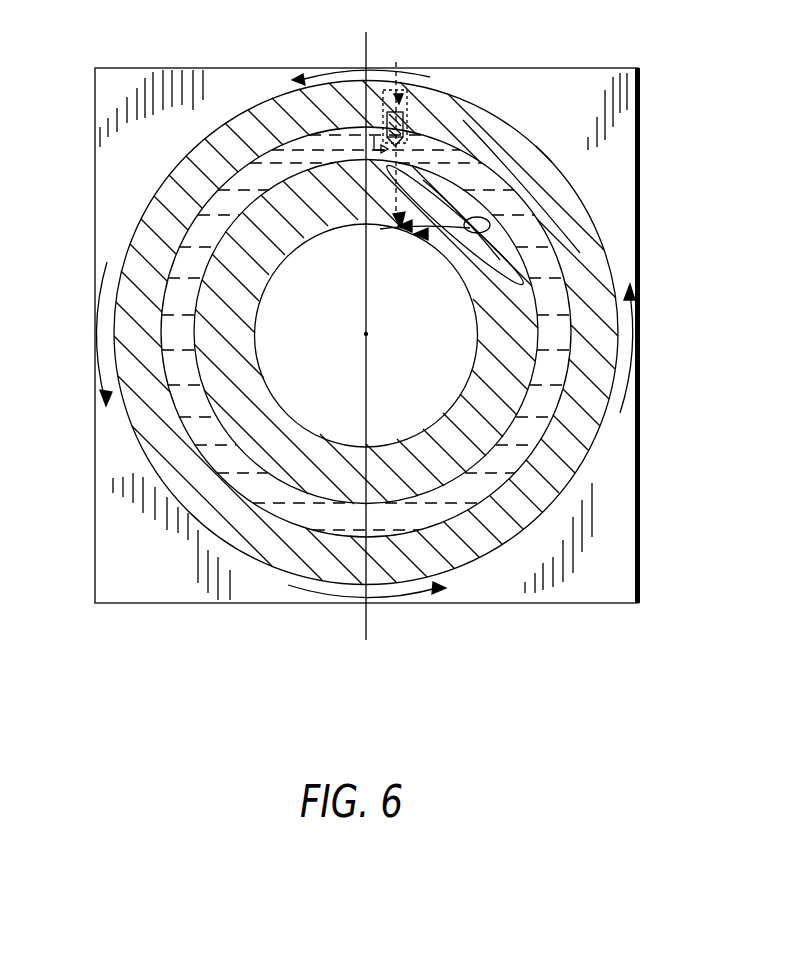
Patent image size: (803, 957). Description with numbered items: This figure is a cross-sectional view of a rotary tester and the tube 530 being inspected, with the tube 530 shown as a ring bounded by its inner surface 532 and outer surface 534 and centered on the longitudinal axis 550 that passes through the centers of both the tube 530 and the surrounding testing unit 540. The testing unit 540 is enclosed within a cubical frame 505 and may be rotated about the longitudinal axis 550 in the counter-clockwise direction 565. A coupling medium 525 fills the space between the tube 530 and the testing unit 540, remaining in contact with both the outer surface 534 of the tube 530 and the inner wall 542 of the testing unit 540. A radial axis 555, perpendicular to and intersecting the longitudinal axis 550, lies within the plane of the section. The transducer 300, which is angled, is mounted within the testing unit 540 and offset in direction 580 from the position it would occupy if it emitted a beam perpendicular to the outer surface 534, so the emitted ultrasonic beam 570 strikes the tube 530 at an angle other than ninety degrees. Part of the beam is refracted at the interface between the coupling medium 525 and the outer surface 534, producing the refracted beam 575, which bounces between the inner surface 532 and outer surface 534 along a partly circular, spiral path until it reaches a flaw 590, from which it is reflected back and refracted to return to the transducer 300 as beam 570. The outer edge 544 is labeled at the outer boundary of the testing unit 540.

The transducer 300 is at (396, 62).
The cubical frame 505 is at (638, 72).
The coupling medium 525 is at (638, 414).
The tube 530 is at (270, 450).
The inner surface 532 is at (256, 316).
The outer surface 534 is at (223, 380).
The testing unit 540 is at (510, 155).
The inner wall 542 is at (212, 205).
The outer edge 544 is at (143, 209).
The longitudinal axis 550 is at (368, 337).
The radial axis 555 is at (366, 50).
The counter-clockwise direction 565 is at (292, 80).
The ultrasonic beam 570 is at (400, 152).
The refracted beam 575 is at (380, 232).
The offset direction 580 is at (372, 136).
The flaw 590 is at (470, 228).